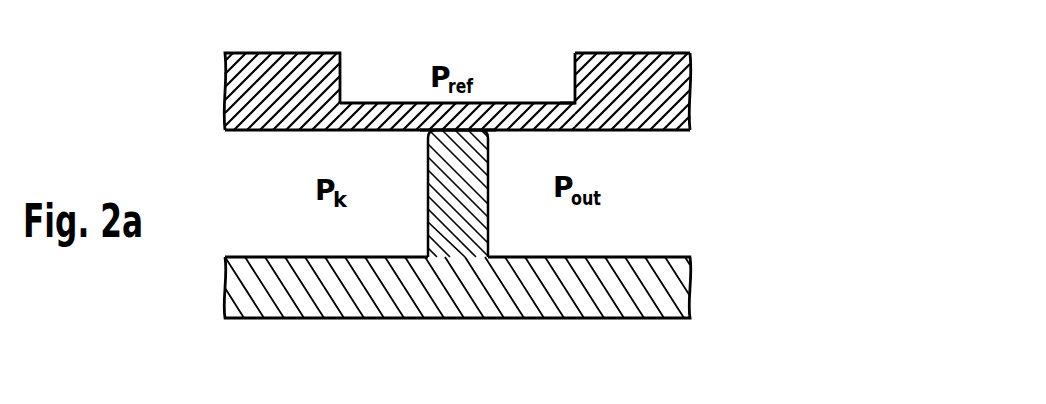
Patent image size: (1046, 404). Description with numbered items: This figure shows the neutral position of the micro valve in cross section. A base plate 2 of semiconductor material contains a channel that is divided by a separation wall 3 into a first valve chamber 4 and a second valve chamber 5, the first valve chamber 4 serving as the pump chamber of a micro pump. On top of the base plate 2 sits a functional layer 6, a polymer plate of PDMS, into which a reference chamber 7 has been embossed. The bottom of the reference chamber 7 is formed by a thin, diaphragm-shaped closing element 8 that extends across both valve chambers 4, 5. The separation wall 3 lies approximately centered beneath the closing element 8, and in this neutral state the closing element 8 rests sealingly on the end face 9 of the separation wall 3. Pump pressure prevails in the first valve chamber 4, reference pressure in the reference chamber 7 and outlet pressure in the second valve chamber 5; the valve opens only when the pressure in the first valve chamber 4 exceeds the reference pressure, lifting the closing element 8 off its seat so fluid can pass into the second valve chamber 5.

The base plate 2 is at (657, 285).
The separation wall 3 is at (462, 214).
The first valve chamber 4 is at (240, 162).
The second valve chamber 5 is at (678, 162).
The functional layer 6 is at (643, 90).
The reference chamber 7 is at (575, 85).
The closing element 8 is at (512, 115).
The end face 9 is at (440, 130).